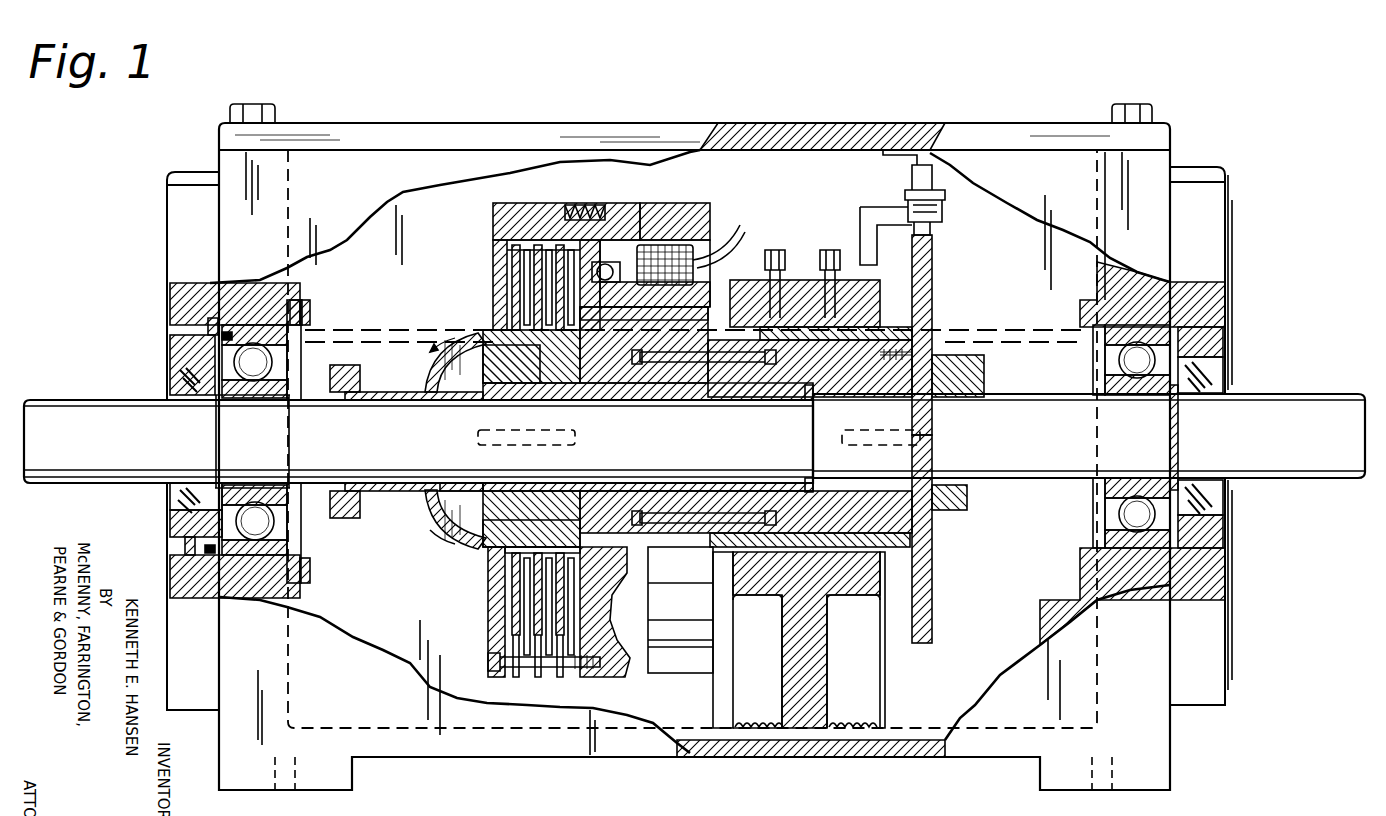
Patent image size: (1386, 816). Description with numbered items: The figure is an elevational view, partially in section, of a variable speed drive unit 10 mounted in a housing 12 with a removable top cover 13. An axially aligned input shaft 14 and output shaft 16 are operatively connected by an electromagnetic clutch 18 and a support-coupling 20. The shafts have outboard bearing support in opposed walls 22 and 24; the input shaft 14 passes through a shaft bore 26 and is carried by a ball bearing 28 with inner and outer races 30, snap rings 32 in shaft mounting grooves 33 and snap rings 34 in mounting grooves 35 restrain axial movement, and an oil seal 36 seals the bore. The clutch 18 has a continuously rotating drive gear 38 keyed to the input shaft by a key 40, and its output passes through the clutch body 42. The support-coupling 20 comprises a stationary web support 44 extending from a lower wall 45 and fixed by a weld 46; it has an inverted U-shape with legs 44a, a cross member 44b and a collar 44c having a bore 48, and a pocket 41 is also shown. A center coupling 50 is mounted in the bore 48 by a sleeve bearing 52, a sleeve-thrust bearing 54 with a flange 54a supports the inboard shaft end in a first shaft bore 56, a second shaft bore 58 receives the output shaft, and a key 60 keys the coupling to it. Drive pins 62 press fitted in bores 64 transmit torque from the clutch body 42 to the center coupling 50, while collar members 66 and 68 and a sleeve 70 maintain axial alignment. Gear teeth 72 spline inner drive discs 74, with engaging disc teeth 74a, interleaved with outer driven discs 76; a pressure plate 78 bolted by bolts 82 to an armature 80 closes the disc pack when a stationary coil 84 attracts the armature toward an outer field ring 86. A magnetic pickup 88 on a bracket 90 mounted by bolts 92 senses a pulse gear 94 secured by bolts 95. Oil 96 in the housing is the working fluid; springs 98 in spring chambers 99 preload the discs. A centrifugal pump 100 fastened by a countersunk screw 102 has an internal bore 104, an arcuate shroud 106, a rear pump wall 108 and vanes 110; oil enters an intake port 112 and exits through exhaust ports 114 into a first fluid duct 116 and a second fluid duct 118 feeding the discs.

The variable speed drive unit 10 is at (1240, 283).
The housing 12 is at (1158, 728).
The removable top cover 13 is at (828, 123).
The input shaft 14 is at (72, 400).
The output shaft 16 is at (1300, 470).
The electromagnetic clutch 18 is at (634, 680).
The support-coupling 20 is at (898, 309).
The wall 22 is at (178, 582).
The wall 24 is at (1225, 562).
The shaft bore 26 is at (182, 550).
The ball bearing 28 is at (290, 565).
The inner and outer races 30 is at (302, 517).
The snap rings 32 is at (232, 475).
The shaft mounting grooves 33 is at (222, 420).
The snap rings 34 is at (182, 332).
The mounting grooves 35 is at (267, 312).
The oil seal 36 is at (178, 345).
The drive gear 38 is at (492, 572).
The key 40 is at (578, 437).
The brake pocket 41 is at (853, 618).
The clutch body 42 is at (678, 384).
The web support 44 is at (868, 668).
The legs 44a is at (748, 693).
The cross member 44b is at (795, 662).
The collar 44c is at (740, 597).
The lower wall 45 is at (880, 745).
The weld 46 is at (760, 730).
The bore 48 is at (934, 553).
The center coupling 50 is at (905, 522).
The sleeve bearing 52 is at (905, 340).
The sleeve-thrust bearing 54 is at (660, 486).
The flange 54a is at (512, 392).
The first shaft bore 56 is at (803, 473).
The second shaft bore 58 is at (880, 472).
The key 60 is at (922, 432).
The drive pins 62 is at (742, 364).
The bores 64 is at (775, 360).
The collar member 66 is at (345, 365).
The collar member 68 is at (972, 378).
The sleeve 70 is at (408, 396).
The gear teeth 72 is at (540, 352).
The inner drive discs 74 is at (540, 312).
The engaging disc teeth 74a is at (580, 555).
The outer driven discs 76 is at (526, 246).
The pressure plate 78 is at (492, 262).
The armature 80 is at (643, 205).
The bolts 82 is at (492, 670).
The stationary coil 84 is at (700, 237).
The outer field ring 86 is at (708, 212).
The magnetic pickup 88 is at (938, 226).
The bracket 90 is at (875, 207).
The bolts 92 is at (828, 250).
The pulse gear 94 is at (934, 262).
The bolts 95 is at (925, 352).
The oil 96 is at (1045, 330).
The spring 98 is at (598, 208).
The spring chamber 99 is at (580, 207).
The centrifugal pump 100 is at (420, 365).
The countersunk screw 102 is at (531, 518).
The internal bore 104 is at (466, 482).
The arcuate shroud 106 is at (468, 538).
The rear pump wall 108 is at (531, 530).
The vanes 110 is at (440, 348).
The intake port 112 is at (432, 524).
The exhaust ports 114 is at (511, 364).
The first fluid duct 116 is at (644, 345).
The second fluid duct 118 is at (644, 320).